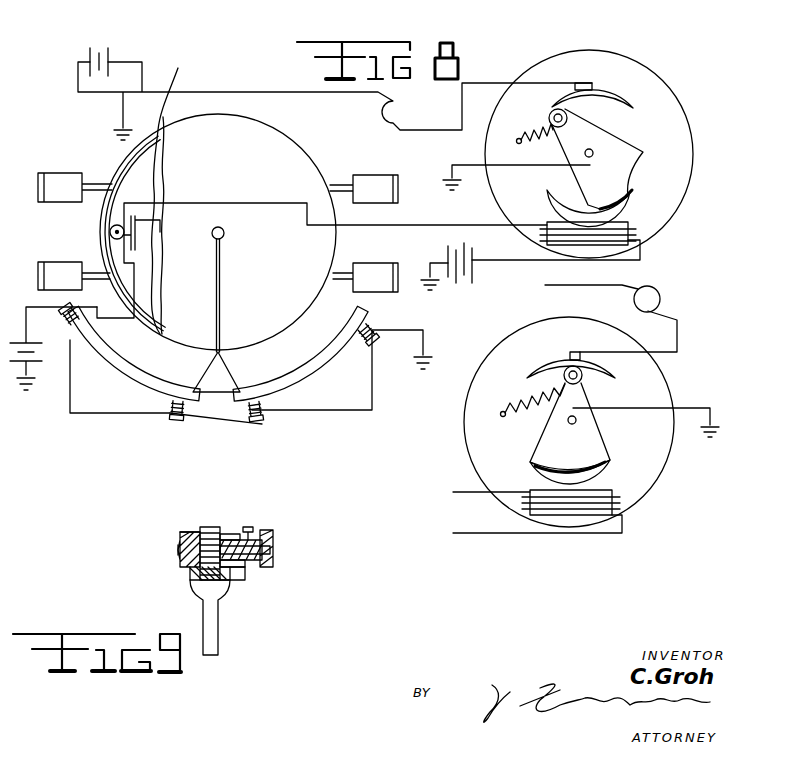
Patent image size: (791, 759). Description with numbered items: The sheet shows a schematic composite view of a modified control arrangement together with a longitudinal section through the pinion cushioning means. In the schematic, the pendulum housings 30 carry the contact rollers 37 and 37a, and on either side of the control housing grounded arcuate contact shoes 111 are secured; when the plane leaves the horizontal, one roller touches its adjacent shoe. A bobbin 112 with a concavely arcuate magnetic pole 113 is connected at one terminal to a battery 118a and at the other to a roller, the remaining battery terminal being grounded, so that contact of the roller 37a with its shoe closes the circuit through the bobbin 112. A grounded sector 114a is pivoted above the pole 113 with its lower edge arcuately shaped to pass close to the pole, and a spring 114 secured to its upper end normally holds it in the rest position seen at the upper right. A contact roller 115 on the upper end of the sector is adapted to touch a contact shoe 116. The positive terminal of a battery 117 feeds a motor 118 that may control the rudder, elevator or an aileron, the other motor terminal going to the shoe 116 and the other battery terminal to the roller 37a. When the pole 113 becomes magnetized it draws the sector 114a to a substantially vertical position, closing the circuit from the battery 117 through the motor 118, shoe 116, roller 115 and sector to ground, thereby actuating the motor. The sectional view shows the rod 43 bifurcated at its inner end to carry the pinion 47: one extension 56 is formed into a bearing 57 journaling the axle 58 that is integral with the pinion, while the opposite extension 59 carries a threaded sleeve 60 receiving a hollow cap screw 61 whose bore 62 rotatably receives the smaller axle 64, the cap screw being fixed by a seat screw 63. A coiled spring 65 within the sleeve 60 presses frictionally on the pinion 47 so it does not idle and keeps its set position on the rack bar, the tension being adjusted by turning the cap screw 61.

In FIG. 8, the housing 30 is at (173, 192).
In FIG. 8, the contact roller 37 is at (553, 289).
In FIG. 8, the contact roller 37a is at (113, 184).
In FIG. 9, the rod 43 is at (212, 634).
In FIG. 9, the pinion 47 is at (212, 530).
In FIG. 9, the extension 56 is at (193, 573).
In FIG. 9, the bearing 57 is at (200, 527).
In FIG. 9, the axle 58 is at (187, 550).
In FIG. 9, the extension 59 is at (233, 570).
In FIG. 9, the sleeve 60 is at (247, 530).
In FIG. 9, the cap screw 61 is at (263, 552).
In FIG. 9, the bore 62 is at (262, 553).
In FIG. 9, the seat screw 63 is at (255, 540).
In FIG. 9, the axle 64 is at (233, 535).
In FIG. 9, the coiled spring 65 is at (240, 565).
In FIG. 8, the arcuate contact shoe 111 is at (104, 228).
In FIG. 8, the bobbin 112 is at (630, 230).
In FIG. 8, the magnetic pole 113 is at (615, 208).
In FIG. 8, the spring 114 is at (523, 128).
In FIG. 8, the sector 114a is at (618, 158).
In FIG. 8, the contact roller 115 is at (613, 100).
In FIG. 8, the contact shoe 116 is at (578, 92).
In FIG. 8, the battery 117 is at (110, 58).
In FIG. 8, the motor 118 is at (390, 122).
In FIG. 8, the battery 118a is at (456, 283).